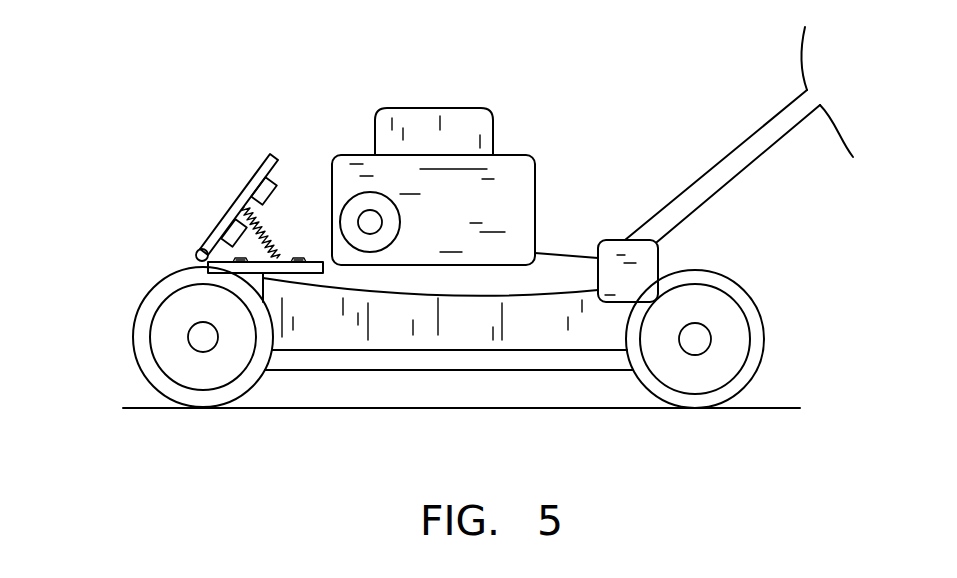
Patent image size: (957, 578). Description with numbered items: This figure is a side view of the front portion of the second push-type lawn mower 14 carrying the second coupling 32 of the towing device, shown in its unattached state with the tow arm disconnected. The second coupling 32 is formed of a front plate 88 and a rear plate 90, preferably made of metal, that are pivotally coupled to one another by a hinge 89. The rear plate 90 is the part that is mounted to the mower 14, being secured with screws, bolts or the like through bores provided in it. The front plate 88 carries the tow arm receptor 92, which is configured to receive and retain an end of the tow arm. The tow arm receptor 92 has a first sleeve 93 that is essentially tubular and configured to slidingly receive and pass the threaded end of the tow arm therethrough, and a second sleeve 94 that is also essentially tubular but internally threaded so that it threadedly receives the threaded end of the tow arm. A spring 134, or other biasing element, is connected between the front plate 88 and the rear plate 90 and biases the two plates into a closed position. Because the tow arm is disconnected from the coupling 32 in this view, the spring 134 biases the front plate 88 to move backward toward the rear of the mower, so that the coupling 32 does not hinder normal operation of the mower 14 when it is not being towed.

The second push-type lawn mower 14 is at (457, 120).
The second coupling 32 is at (140, 150).
The front plate 88 is at (271, 160).
The hinge 89 is at (199, 249).
The rear plate 90 is at (282, 268).
The tow arm receptor 92 is at (163, 262).
The first sleeve 93 is at (262, 180).
The second sleeve 94 is at (237, 225).
The spring 134 is at (277, 251).